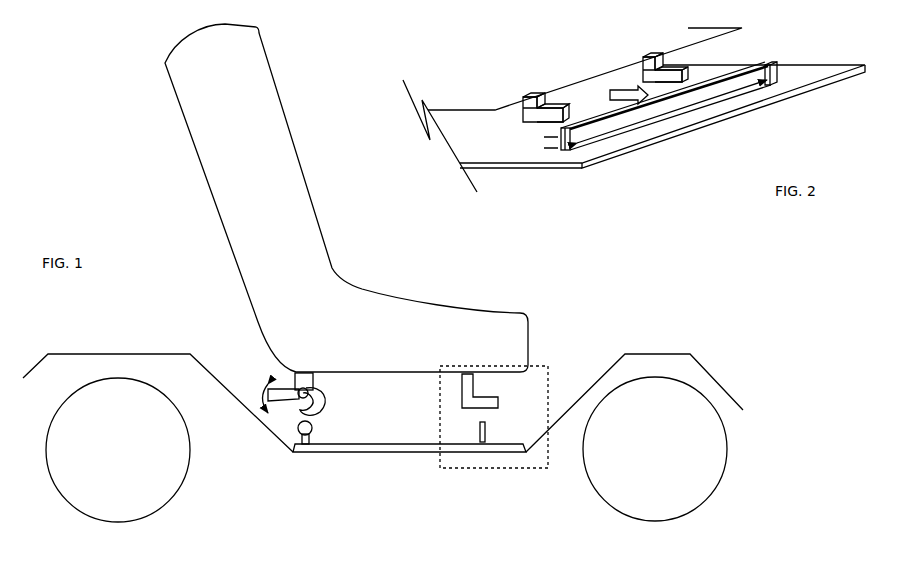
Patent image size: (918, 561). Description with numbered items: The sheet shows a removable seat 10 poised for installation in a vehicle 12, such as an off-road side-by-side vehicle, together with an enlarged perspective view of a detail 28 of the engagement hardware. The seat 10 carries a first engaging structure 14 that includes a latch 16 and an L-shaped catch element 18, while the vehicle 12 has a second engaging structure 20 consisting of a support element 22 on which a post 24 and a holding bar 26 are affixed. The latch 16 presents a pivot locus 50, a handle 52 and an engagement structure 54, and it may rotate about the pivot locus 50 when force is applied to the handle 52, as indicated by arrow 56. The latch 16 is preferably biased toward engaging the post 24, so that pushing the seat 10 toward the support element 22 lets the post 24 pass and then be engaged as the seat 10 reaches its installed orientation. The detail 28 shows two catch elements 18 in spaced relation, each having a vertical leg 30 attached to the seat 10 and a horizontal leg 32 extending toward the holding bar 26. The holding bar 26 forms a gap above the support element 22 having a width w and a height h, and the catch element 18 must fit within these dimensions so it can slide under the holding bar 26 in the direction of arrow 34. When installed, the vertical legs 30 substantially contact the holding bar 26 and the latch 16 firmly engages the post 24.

In FIG. 1, the removable seat 10 is at (380, 276).
In FIG. 2, the removable seat 10 is at (705, 28).
In FIG. 1, the vehicle 12 is at (722, 364).
In FIG. 1, the first engaging structure 14 is at (218, 358).
In FIG. 1, the latch 16 is at (329, 390).
In FIG. 1, the L-shaped catch element 18 is at (485, 393).
In FIG. 2, the L-shaped catch element 18 is at (528, 100).
In FIG. 1, the second engaging structure 20 is at (507, 430).
In FIG. 1, the support element 22 is at (322, 455).
In FIG. 2, the support element 22 is at (652, 142).
In FIG. 1, the post 24 is at (317, 425).
In FIG. 1, the holding bar 26 is at (480, 430).
In FIG. 2, the holding bar 26 is at (770, 62).
In FIG. 1, the detail 28 is at (542, 365).
In FIG. 2, the detail 28 is at (772, 124).
In FIG. 2, the vertical leg 30 is at (522, 107).
In FIG. 2, the horizontal leg 32 is at (533, 123).
In FIG. 2, the arrow 34 is at (608, 88).
In FIG. 1, the pivot locus 50 is at (305, 387).
In FIG. 1, the handle 52 is at (282, 389).
In FIG. 1, the engagement structure 54 is at (326, 403).
In FIG. 1, the arrow 56 is at (250, 402).